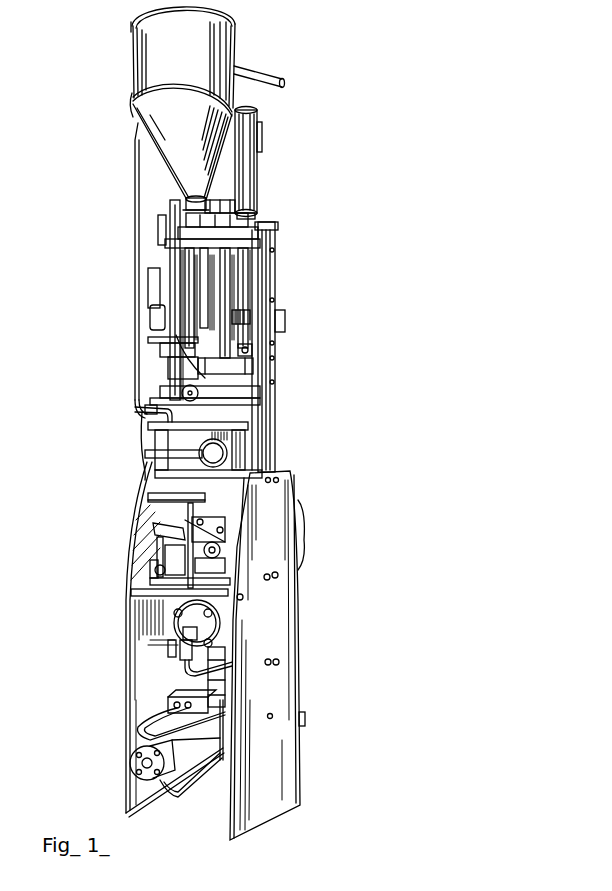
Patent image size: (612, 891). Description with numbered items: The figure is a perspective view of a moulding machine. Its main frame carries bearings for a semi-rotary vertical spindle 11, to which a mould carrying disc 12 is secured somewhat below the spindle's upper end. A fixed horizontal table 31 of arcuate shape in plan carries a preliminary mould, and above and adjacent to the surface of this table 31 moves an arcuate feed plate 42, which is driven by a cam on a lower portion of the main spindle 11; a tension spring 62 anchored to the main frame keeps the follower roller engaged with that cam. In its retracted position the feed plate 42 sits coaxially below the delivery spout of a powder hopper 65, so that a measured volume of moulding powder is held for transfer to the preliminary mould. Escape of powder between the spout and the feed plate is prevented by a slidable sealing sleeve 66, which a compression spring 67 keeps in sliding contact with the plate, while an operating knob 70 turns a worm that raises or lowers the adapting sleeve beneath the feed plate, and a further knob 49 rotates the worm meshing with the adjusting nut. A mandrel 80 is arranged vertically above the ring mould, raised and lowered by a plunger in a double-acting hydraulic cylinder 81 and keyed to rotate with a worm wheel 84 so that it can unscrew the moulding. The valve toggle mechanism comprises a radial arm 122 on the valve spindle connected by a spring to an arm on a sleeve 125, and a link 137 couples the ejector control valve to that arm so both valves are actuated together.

The powder hopper 65 is at (207, 108).
The double-acting hydraulic cylinder 81 is at (258, 173).
The semi-rotary vertical spindle 11 is at (226, 310).
The worm wheel 84 is at (250, 318).
The mandrel 80 is at (252, 355).
The mould carrying disc 12 is at (226, 365).
The compression spring 67 is at (160, 355).
The slidable sealing sleeve 66 is at (168, 383).
The operating knob 70 is at (135, 408).
The arcuate feed plate 42 is at (198, 393).
The fixed horizontal table 31 is at (198, 405).
The knob 49 is at (227, 451).
The tension spring 62 is at (158, 527).
The link 137 is at (157, 540).
The sleeve 125 is at (222, 540).
The radial arm 122 is at (220, 563).